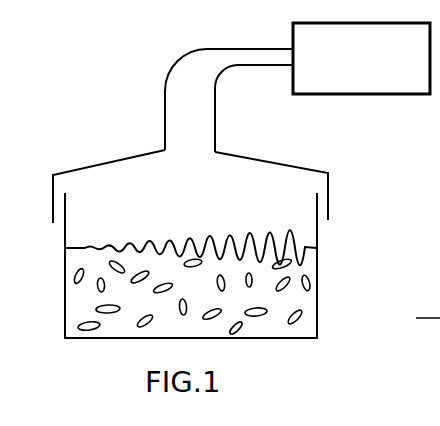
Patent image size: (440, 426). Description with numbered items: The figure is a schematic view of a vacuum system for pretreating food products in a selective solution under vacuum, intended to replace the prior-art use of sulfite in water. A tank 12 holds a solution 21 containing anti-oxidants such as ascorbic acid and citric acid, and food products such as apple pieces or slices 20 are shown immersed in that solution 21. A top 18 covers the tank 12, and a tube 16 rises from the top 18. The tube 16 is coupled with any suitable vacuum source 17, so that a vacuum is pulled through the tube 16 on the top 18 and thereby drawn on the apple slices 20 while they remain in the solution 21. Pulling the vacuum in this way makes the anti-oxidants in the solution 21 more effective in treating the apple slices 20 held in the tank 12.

The tank 12 is at (319, 310).
The tube 16 is at (165, 112).
The vacuum source 17 is at (377, 96).
The top 18 is at (127, 158).
The apple pieces or slices 20 is at (255, 317).
The solution 21 is at (308, 265).